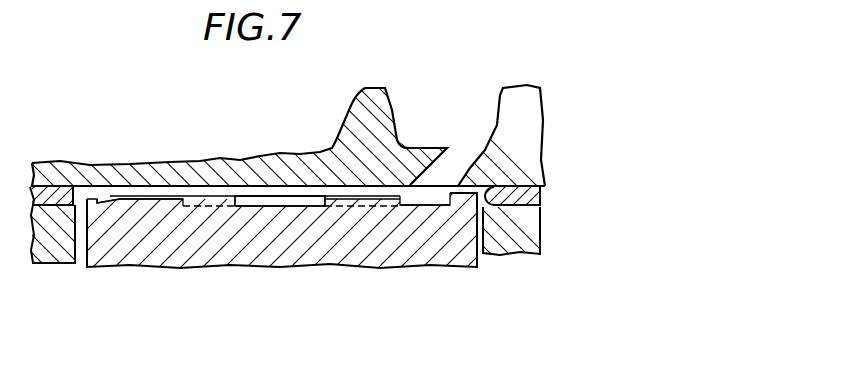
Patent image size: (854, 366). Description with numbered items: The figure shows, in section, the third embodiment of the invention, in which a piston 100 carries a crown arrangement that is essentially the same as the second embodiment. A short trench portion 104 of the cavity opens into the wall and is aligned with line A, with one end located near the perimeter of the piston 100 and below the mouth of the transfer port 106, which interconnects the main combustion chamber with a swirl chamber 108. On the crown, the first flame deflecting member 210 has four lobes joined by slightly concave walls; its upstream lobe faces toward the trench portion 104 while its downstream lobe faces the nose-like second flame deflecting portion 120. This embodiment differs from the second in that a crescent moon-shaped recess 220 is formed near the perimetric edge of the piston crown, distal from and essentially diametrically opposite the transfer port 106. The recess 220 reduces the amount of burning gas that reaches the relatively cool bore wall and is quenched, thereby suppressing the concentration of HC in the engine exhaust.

The piston 100 is at (457, 250).
The trench portion 104 is at (427, 206).
The transfer port 106 is at (458, 168).
The swirl chamber 108 is at (497, 122).
The second flame deflecting portion 120 is at (240, 197).
The first flame deflecting member 210 is at (311, 197).
The crescent moon-shaped recess 220 is at (107, 201).